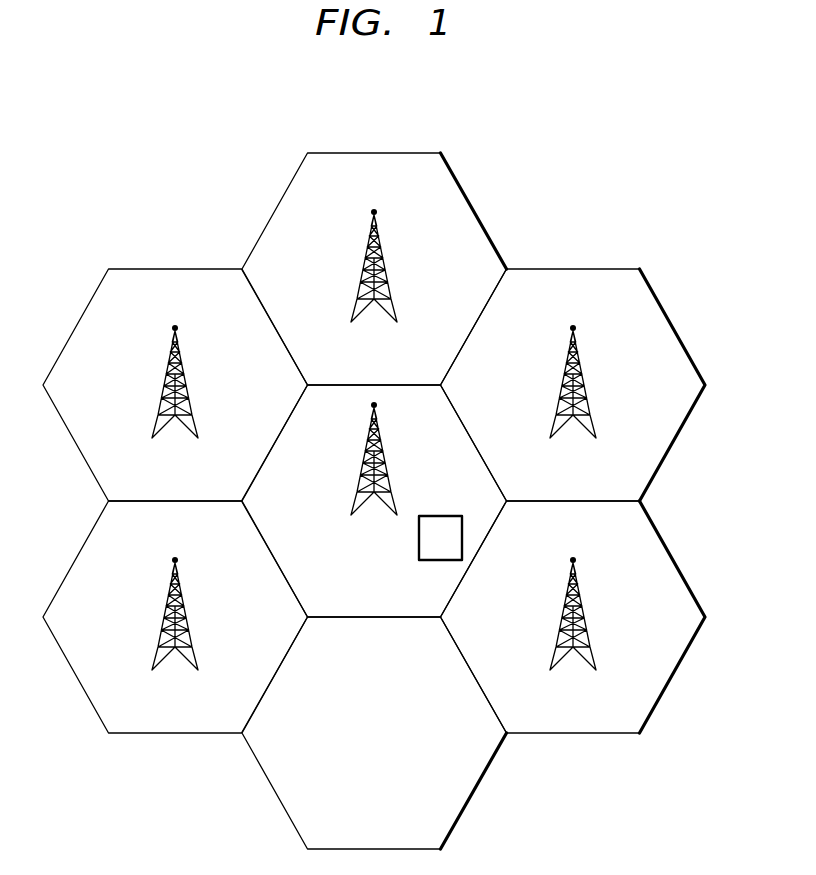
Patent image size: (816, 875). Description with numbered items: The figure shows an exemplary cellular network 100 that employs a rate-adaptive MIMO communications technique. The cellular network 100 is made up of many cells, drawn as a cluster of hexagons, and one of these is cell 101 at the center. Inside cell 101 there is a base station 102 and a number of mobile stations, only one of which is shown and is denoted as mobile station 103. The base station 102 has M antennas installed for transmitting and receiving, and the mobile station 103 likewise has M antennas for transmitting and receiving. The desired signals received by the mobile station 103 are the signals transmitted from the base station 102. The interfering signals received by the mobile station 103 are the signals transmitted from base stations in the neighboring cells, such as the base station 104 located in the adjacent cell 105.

The cellular network 100 is at (393, 93).
The cell 101 is at (346, 575).
The base station 102 is at (362, 455).
The mobile station 103 is at (443, 515).
The base station 104 is at (562, 612).
The cell 105 is at (670, 672).